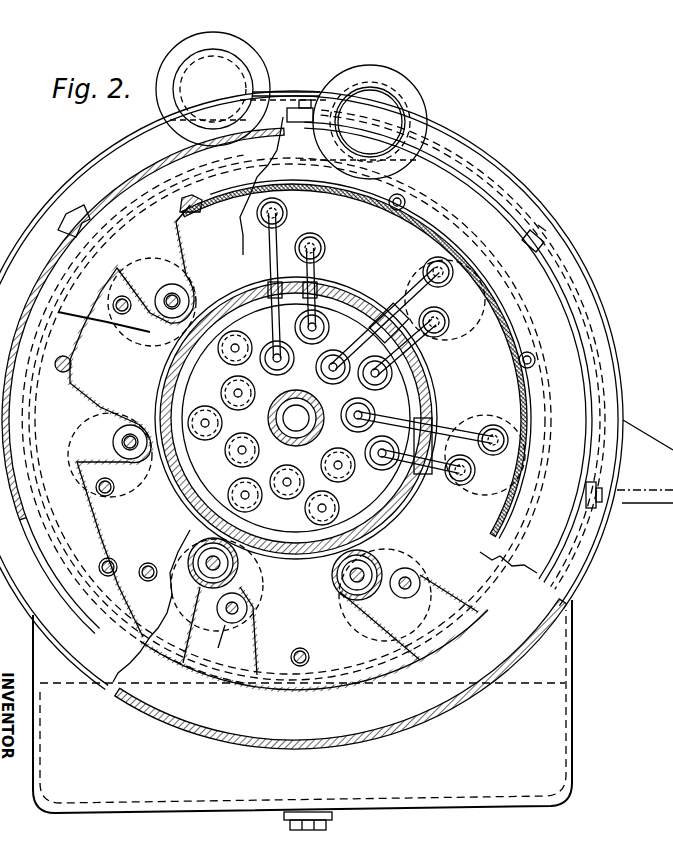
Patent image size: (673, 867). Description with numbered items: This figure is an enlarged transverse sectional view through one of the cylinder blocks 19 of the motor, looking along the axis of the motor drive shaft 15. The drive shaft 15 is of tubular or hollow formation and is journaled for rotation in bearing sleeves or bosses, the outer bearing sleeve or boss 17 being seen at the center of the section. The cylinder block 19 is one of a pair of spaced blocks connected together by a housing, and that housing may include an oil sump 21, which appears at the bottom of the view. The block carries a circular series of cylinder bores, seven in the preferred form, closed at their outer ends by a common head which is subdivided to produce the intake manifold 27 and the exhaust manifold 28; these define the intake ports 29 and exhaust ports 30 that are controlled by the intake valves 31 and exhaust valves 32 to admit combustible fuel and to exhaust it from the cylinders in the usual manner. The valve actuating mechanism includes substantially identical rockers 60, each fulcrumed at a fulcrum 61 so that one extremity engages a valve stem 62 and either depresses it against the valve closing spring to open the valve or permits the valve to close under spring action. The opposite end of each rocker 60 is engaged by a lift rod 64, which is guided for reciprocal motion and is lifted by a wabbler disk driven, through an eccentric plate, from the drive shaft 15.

The motor drive shaft 15 is at (320, 440).
The outer bearing sleeve or boss 17 is at (318, 428).
The cylinder block 19 is at (583, 346).
The oil sump 21 is at (578, 708).
The intake manifold 27 is at (130, 186).
The exhaust manifold 28 is at (219, 639).
The intake port 29 is at (172, 300).
The exhaust port 30 is at (300, 625).
The intake valve 31 is at (172, 305).
The exhaust valve 32 is at (246, 608).
The rocker 60 is at (318, 262).
The rocker fulcrum 61 is at (330, 290).
The valve stem 62 is at (180, 300).
The lift rod 64 is at (235, 348).